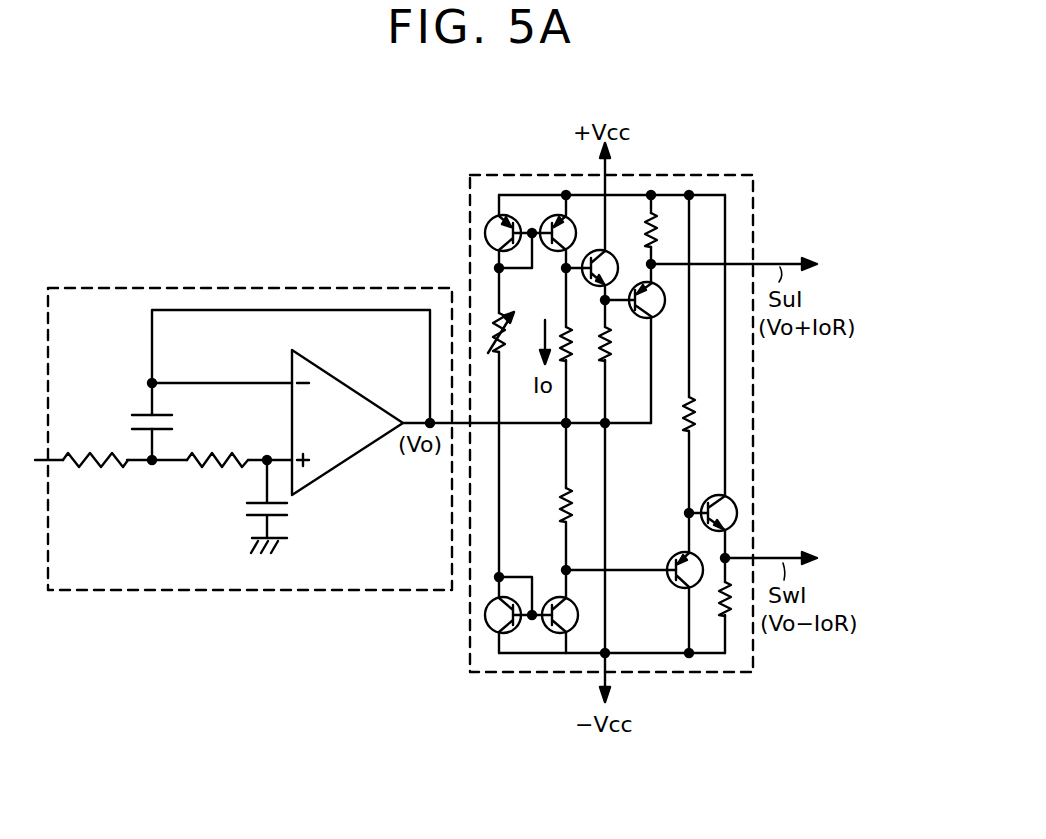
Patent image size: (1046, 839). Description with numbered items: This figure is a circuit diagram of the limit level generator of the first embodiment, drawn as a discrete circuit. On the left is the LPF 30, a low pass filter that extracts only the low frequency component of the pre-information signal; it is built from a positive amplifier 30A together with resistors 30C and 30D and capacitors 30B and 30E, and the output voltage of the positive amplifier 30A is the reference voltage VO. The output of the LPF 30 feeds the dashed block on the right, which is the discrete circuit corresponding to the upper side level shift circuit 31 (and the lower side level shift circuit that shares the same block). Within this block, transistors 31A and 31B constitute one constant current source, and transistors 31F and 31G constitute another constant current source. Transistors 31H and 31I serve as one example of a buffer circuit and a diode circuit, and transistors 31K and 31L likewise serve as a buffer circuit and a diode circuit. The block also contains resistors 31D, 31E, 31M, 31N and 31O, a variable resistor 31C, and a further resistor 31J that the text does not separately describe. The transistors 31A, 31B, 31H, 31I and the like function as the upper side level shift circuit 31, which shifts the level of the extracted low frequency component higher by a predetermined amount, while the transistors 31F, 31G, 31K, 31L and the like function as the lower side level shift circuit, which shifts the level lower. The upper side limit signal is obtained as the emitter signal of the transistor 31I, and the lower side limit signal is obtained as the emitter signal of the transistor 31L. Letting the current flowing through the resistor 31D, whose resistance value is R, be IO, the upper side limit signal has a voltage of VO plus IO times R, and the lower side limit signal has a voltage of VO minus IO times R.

The LPF (Low Pass Filter) 30 is at (302, 288).
The positive amplifier 30A is at (362, 390).
The capacitor 30B is at (173, 421).
The resistor 30C is at (97, 475).
The resistor 30D is at (216, 475).
The capacitor 30E is at (297, 513).
The upper side level shift circuit 31 is at (737, 175).
The transistor 31A is at (490, 220).
The transistor 31B is at (553, 222).
The variable resistor 31C is at (488, 315).
The resistor 31D is at (573, 355).
The resistor 31E is at (557, 507).
The transistor 31F is at (487, 628).
The transistor 31G is at (553, 630).
The transistor 31H is at (597, 253).
The transistor 31I is at (660, 293).
The resistor 31J is at (618, 340).
The transistor 31K is at (678, 590).
The transistor 31L is at (738, 512).
The resistor 31M is at (700, 415).
The resistor 31N is at (732, 608).
The resistor 31O is at (638, 238).